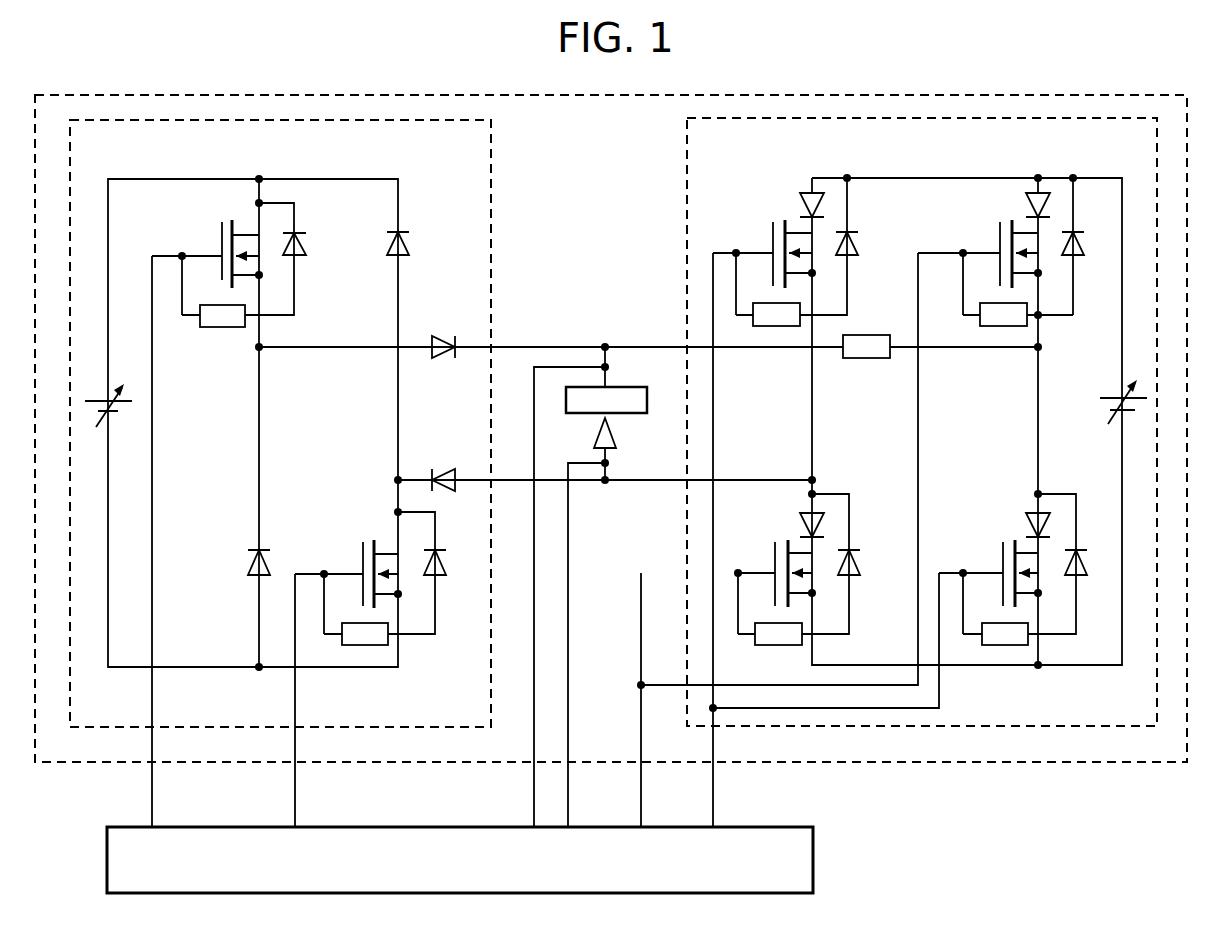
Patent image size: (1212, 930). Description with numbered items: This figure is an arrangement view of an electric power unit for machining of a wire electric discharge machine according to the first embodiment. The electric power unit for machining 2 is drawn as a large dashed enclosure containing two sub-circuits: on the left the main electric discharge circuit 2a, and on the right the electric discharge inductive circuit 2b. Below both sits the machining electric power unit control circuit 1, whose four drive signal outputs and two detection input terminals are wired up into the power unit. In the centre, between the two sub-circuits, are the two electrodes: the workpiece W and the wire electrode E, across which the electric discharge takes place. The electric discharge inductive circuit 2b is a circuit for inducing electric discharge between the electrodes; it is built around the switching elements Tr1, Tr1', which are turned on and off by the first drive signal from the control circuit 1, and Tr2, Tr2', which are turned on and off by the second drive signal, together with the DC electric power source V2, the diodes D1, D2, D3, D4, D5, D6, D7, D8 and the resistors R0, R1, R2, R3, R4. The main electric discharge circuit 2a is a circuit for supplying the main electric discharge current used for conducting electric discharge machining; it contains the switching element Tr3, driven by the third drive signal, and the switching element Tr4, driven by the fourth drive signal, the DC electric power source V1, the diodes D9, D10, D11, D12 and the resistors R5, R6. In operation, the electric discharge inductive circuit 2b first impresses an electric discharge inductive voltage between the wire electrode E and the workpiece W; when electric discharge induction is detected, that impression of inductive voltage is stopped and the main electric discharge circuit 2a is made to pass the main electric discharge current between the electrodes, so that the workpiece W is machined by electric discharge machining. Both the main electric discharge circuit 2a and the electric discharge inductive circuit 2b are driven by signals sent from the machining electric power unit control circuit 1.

The machining electric power unit control circuit 1 is at (813, 845).
The electric power unit for machining 2 is at (712, 93).
The main electric discharge circuit 2a is at (491, 193).
The electric discharge inductive circuit 2b is at (687, 193).
The switching element Tr1 is at (996, 559).
The switching element Tr2 is at (996, 239).
The switching element Tr3 is at (222, 232).
The switching element Tr4 is at (362, 548).
The switching element Tr1' is at (769, 239).
The switching element Tr2' is at (770, 564).
The diode D1 is at (1087, 570).
The diode D2 is at (1030, 516).
The diode D3 is at (409, 244).
The diode D4 is at (1044, 193).
The diode D5 is at (858, 244).
The diode D6 is at (806, 193).
The diode D7 is at (860, 568).
The diode D8 is at (802, 518).
The diode D9 is at (306, 244).
The diode D10 is at (448, 560).
The diode D11 is at (446, 336).
The diode D12 is at (446, 469).
The resistor R0 is at (872, 335).
The resistor R1 is at (986, 646).
The resistor R2 is at (977, 320).
The resistor R3 is at (768, 326).
The resistor R4 is at (764, 650).
The resistor R5 is at (221, 327).
The resistor R6 is at (346, 642).
The electric power source of DC V1 is at (132, 401).
The electric power source of DC V2 is at (1102, 400).
The workpiece W is at (621, 402).
The wire electrode E is at (614, 433).